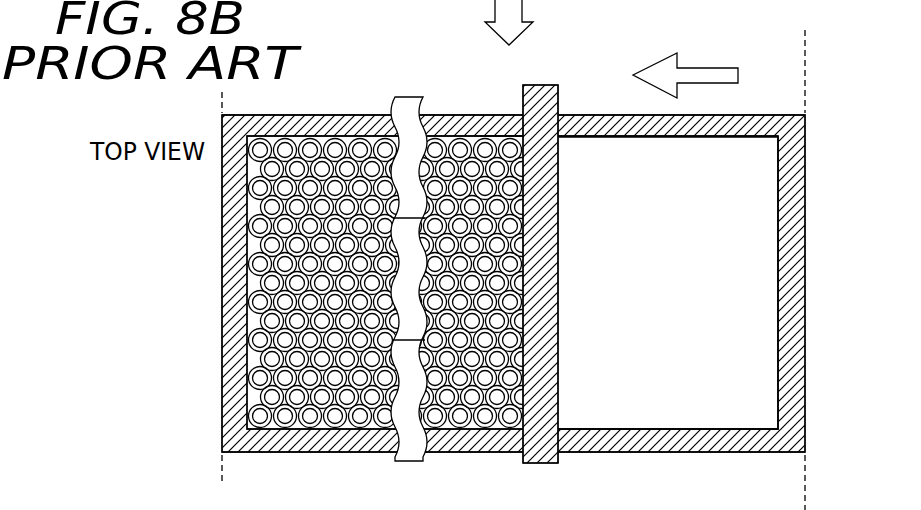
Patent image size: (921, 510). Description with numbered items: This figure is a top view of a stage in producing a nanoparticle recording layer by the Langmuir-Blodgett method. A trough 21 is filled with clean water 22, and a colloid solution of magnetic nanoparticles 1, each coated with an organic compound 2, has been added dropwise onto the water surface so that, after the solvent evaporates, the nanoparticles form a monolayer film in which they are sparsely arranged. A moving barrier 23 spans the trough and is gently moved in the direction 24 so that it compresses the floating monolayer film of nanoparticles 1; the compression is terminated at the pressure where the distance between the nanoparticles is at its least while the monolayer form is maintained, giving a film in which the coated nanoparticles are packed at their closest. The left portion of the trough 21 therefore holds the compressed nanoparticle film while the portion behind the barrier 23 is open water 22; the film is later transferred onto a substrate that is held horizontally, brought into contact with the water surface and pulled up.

The magnetic nanoparticle 1 is at (484, 136).
The organic compound coating 2 is at (516, 132).
The trough 21 is at (798, 305).
The clean water 22 is at (687, 402).
The moving barrier 23 is at (548, 437).
The direction 24 is at (650, 69).